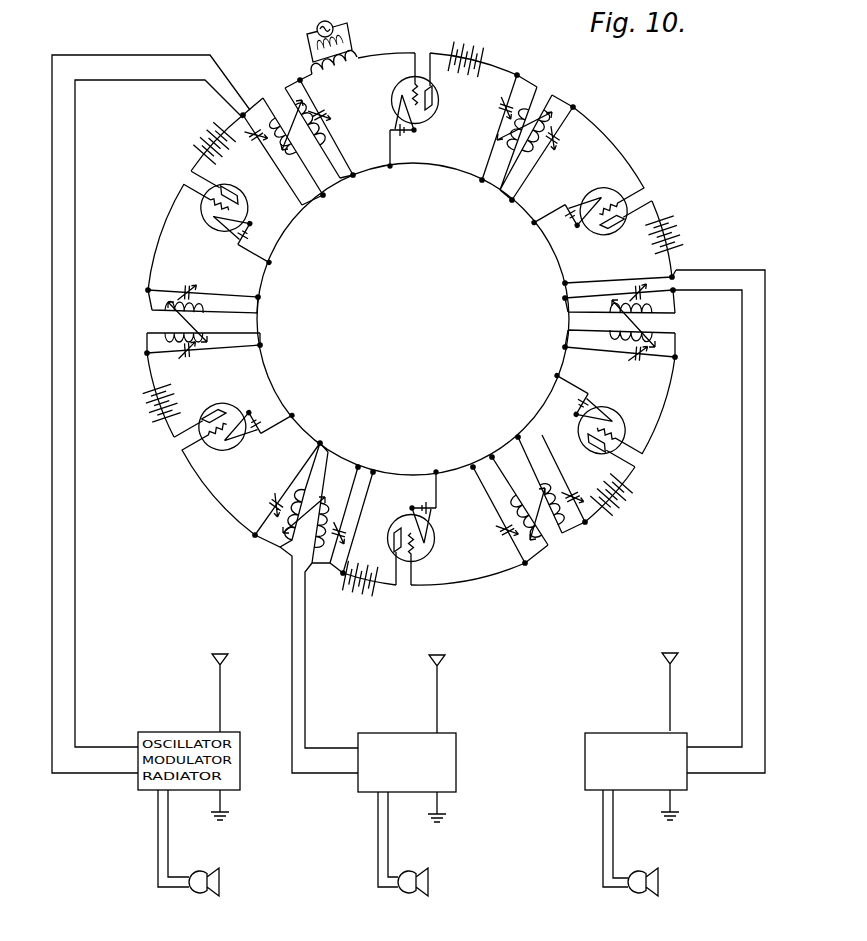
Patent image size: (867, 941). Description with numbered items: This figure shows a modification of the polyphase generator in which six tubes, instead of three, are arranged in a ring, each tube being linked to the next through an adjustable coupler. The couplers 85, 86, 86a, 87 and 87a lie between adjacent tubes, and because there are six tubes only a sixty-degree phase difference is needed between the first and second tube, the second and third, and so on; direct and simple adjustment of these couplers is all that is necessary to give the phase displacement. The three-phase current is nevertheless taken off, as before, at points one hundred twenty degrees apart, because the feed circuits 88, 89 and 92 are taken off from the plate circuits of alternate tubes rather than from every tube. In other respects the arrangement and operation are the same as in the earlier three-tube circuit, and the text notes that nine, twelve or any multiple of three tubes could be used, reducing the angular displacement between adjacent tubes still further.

The coupler 85 is at (527, 133).
The coupler 86 is at (529, 504).
The coupler 86a is at (480, 427).
The coupler 87 is at (183, 321).
The coupler 87a is at (299, 113).
The feed circuit 88 is at (720, 521).
The feed circuit 89 is at (319, 660).
The feed circuit 92 is at (151, 414).